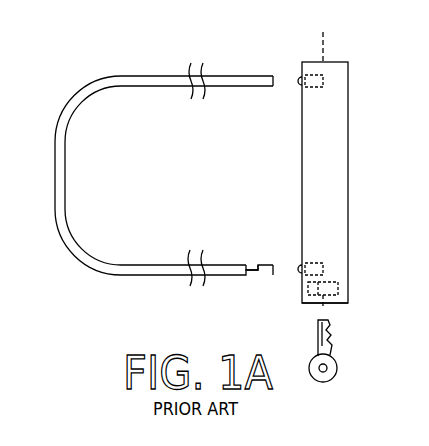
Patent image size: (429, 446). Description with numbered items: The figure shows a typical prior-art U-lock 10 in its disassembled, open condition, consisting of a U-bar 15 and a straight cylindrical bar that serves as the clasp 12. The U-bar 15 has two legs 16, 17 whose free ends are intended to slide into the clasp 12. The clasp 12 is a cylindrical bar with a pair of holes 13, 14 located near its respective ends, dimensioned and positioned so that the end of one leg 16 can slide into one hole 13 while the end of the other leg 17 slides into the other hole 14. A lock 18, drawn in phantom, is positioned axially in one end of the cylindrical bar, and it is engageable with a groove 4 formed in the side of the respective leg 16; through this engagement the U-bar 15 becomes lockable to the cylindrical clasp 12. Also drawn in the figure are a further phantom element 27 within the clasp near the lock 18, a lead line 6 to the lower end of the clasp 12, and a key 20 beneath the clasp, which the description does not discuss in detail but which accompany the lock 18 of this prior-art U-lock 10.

The U-lock 10 is at (74, 279).
The U bar 15 is at (68, 208).
The leg 16 is at (155, 263).
The leg 17 is at (178, 88).
The groove 4 is at (251, 263).
The clasp 12 is at (325, 200).
The hole 14 is at (320, 83).
The hole 13 is at (320, 266).
The lock 18 is at (322, 277).
The lock cylinder 27 is at (330, 292).
The bottom face of lock body 6 is at (318, 303).
The key 20 is at (337, 364).